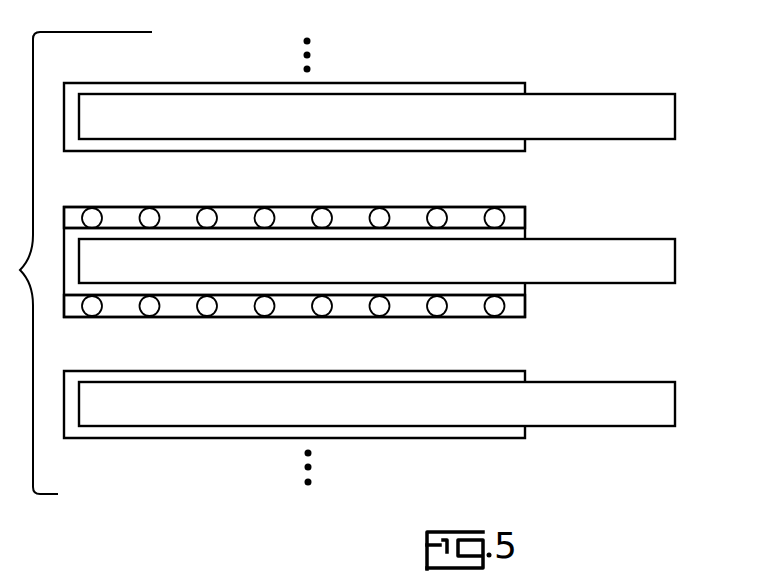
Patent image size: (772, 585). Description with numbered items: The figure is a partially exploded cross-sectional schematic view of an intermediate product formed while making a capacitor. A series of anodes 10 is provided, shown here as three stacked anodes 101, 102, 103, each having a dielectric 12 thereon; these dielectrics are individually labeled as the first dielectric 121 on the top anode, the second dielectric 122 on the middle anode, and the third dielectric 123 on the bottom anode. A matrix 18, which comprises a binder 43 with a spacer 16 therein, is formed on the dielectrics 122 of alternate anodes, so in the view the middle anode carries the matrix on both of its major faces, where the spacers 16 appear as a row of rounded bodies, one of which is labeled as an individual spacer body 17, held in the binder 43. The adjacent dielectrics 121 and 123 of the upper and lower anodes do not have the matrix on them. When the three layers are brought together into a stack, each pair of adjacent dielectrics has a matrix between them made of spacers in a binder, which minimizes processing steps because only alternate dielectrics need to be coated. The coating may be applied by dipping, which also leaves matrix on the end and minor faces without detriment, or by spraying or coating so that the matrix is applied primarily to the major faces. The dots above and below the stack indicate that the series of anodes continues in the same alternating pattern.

The piezoelectric plate / element 10 is at (400, 261).
The first piezoelectric element (10¹) 101 is at (647, 115).
The second piezoelectric element (10²) 102 is at (640, 265).
The third piezoelectric element (10³) 103 is at (640, 408).
The electrode layer 12 is at (330, 250).
The first electrode layer (12¹) 121 is at (522, 86).
The second electrode layer (12²) 122 is at (527, 232).
The third electrode layer (12³) 123 is at (527, 373).
The lower spacer layer with spherical spacers 16 is at (95, 316).
The spherical spacer particle 17 is at (177, 216).
The upper spacer layer 18 is at (291, 260).
The gap / spacing between spacer particles 43 is at (237, 218).